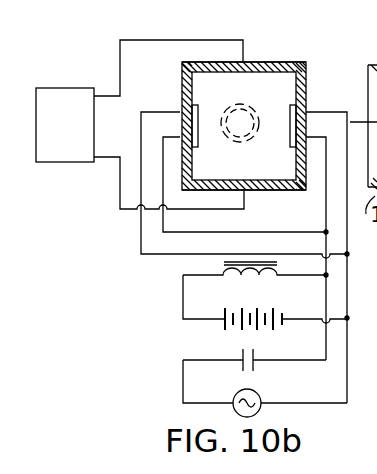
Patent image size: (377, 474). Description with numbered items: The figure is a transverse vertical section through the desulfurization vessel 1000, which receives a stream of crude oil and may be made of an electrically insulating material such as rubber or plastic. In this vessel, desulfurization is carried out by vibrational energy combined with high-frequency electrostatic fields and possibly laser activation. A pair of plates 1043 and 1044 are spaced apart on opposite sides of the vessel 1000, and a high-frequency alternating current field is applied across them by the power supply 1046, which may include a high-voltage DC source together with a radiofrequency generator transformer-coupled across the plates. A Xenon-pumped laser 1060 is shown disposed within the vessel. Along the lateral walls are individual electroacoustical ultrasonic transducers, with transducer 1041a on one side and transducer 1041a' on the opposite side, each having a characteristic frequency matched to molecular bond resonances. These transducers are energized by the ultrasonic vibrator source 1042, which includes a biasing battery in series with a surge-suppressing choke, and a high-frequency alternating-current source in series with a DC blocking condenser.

The desulfurization vessel 1000 is at (259, 62).
The plate 1043 is at (184, 71).
The plate 1044 is at (275, 166).
The electroacoustical ultrasonic transducer 1041a is at (328, 118).
The electroacoustical ultrasonic transducer 1041a' is at (233, 112).
The Xenon-pumped laser 1060 is at (256, 108).
The power supply 1046 is at (47, 87).
The ultrasonic vibrator source 1042 is at (181, 362).